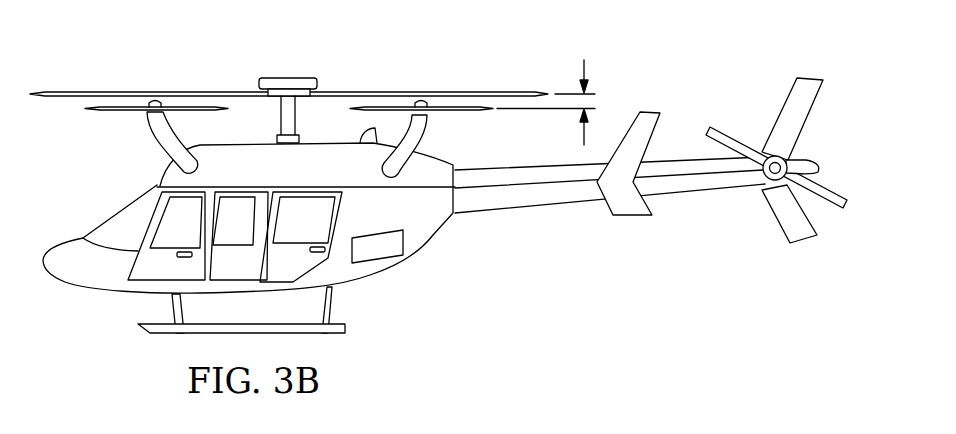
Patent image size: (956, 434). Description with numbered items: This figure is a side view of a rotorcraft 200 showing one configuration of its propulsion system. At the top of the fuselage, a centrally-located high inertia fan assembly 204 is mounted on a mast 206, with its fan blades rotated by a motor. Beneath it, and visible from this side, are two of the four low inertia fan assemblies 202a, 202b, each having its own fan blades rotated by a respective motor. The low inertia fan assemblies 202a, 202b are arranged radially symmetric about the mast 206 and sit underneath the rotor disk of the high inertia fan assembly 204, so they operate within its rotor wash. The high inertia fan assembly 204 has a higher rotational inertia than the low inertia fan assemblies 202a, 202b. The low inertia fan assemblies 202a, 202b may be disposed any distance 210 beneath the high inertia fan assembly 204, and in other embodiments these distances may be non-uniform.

The rotorcraft 200 is at (553, 65).
The low inertia fan assembly 202a is at (108, 112).
The low inertia fan assembly 202b is at (470, 112).
The high inertia fan assembly 204 is at (223, 82).
The mast 206 is at (295, 118).
The distance 210 is at (586, 70).